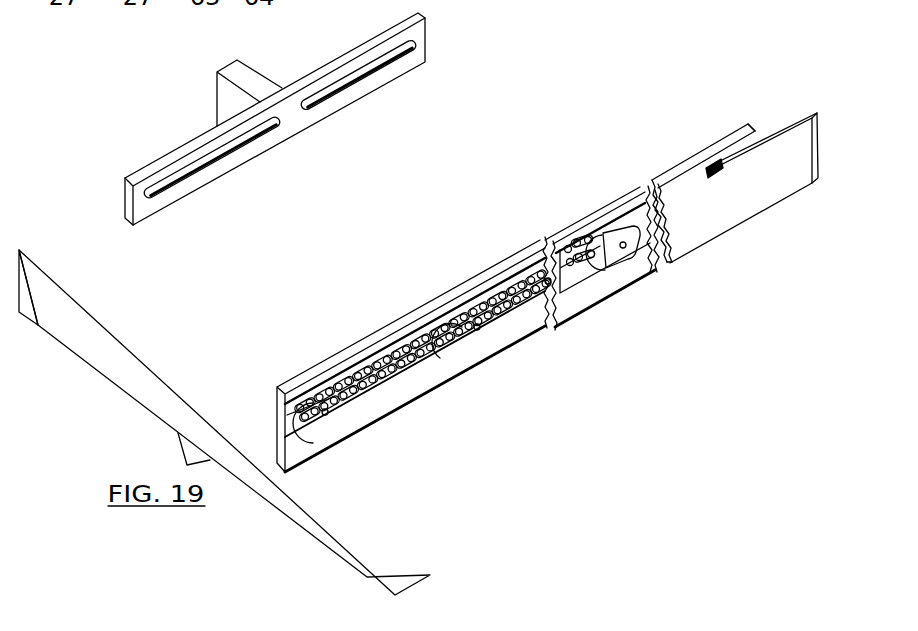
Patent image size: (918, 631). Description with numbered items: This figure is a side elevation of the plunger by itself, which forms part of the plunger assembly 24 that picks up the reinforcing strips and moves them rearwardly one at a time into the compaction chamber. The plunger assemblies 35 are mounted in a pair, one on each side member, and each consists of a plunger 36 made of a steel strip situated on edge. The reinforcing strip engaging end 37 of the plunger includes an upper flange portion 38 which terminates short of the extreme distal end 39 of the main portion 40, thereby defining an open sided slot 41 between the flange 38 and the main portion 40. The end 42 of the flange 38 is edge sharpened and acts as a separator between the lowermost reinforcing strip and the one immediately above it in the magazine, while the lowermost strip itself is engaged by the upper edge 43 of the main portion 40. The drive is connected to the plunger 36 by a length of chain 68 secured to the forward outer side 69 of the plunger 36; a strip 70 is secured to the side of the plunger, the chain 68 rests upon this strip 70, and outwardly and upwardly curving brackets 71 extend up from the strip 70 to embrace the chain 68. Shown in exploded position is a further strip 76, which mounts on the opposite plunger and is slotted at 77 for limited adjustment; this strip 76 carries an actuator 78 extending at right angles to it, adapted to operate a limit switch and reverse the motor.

The plunger assembly 24 is at (692, 236).
The plunger assemblies 35 is at (396, 402).
The plunger 36 is at (580, 300).
The reinforcing strip engaging end 37 is at (748, 200).
The upper flange portion 38 is at (727, 138).
The extreme distal end 39 is at (820, 138).
The main portion 40 is at (793, 167).
The open sided slot 41 is at (722, 170).
The end of the flange 42 is at (750, 127).
The upper edge 43 is at (787, 130).
The chain 68 is at (450, 300).
The forward outer side 69 is at (627, 215).
The strip 70 is at (347, 412).
The brackets 71 is at (325, 418).
The strip 76 is at (195, 192).
The slot 77 is at (245, 143).
The actuator 78 is at (252, 86).